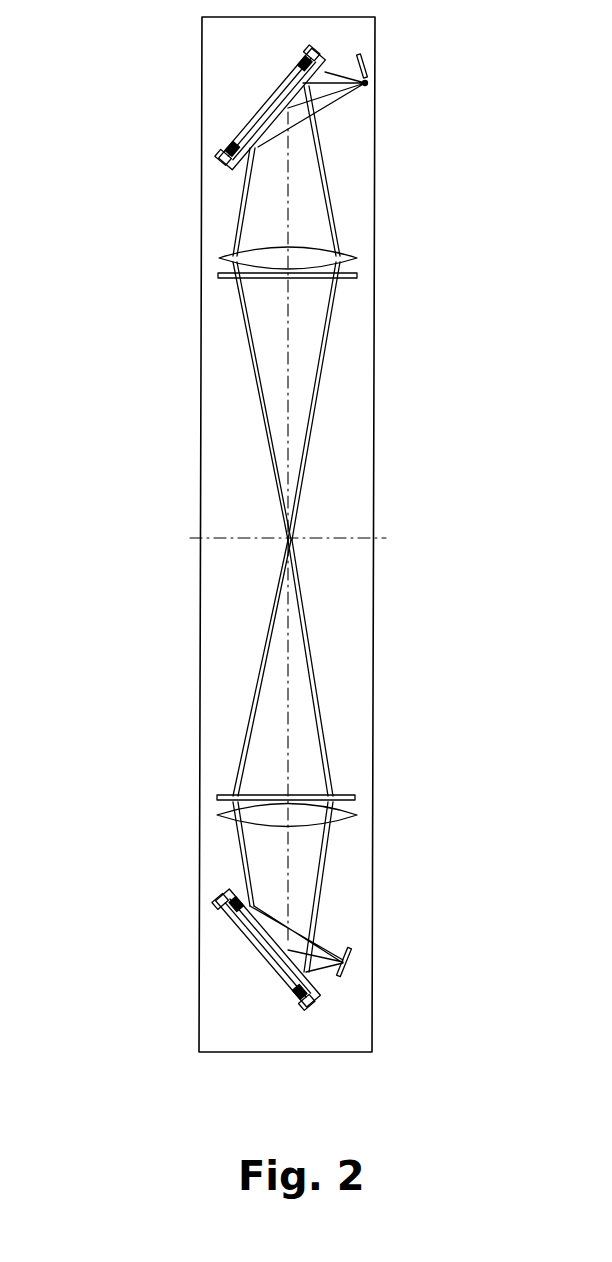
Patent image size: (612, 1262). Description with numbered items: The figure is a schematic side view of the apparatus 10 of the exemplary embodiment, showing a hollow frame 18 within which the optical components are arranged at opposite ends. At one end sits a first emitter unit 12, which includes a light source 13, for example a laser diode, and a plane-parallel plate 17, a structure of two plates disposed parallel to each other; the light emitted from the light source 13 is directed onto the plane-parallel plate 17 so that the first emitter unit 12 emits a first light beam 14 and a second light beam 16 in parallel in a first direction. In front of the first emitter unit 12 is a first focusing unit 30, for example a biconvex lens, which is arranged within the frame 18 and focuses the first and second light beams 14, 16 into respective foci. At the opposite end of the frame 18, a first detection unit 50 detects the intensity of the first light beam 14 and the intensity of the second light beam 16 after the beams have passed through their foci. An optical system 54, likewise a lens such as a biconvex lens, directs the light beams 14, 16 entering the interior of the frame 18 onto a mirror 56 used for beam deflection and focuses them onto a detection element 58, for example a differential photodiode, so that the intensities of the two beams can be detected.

The optical measuring device 10 is at (112, 381).
The first emitter unit 12 is at (242, 73).
The light source 13 is at (369, 83).
The first light beam 14 is at (300, 471).
The second light beam 16 is at (272, 606).
The plane-parallel plate 17 is at (326, 66).
The frame 18 is at (372, 430).
The first focusing unit 30 is at (358, 268).
The first detection unit 50 is at (236, 968).
The optical system 54 is at (355, 810).
The mirror 56 is at (322, 988).
The detection element 58 is at (355, 962).